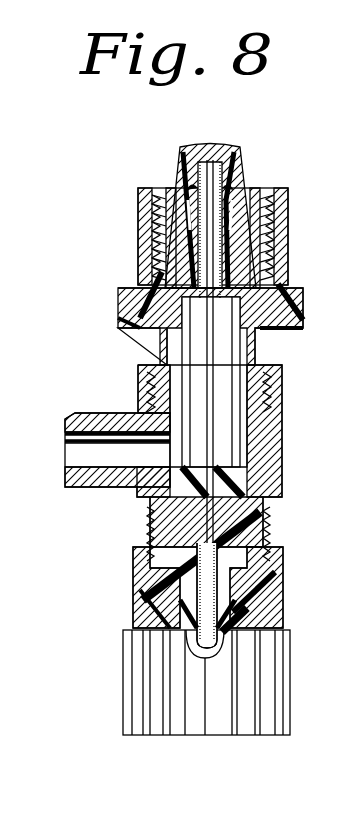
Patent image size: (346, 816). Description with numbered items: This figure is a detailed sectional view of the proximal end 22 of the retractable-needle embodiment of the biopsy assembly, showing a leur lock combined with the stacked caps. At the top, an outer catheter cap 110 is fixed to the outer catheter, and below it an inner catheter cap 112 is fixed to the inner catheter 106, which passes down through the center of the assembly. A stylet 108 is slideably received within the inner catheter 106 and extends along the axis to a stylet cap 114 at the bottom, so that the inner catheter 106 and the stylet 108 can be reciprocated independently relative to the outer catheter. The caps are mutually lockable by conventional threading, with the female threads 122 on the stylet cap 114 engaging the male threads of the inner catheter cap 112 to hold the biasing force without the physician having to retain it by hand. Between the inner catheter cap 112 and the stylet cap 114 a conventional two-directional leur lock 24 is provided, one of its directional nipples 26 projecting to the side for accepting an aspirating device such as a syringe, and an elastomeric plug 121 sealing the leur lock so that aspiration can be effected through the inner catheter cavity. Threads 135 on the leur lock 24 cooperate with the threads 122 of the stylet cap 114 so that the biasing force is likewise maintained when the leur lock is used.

The proximal end 22 is at (70, 312).
The two-directional leur lock 24 is at (266, 452).
The directional nipple 26 is at (105, 412).
The inner catheter 106 is at (231, 170).
The stylet 108 is at (212, 347).
The outer catheter cap 110 is at (178, 166).
The inner catheter cap 112 is at (297, 294).
The stylet cap 114 is at (270, 588).
The elastomeric plug 121 is at (243, 478).
The female threads 122 is at (140, 578).
The threads 135 is at (146, 530).